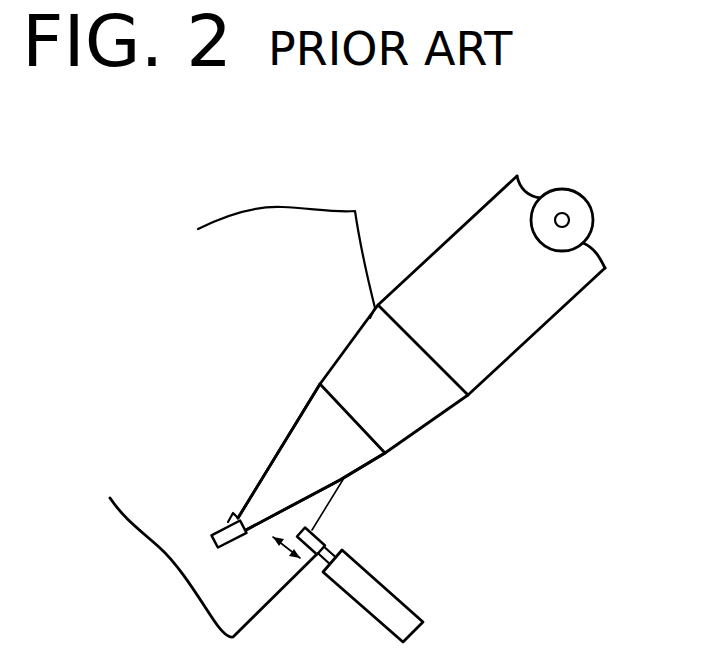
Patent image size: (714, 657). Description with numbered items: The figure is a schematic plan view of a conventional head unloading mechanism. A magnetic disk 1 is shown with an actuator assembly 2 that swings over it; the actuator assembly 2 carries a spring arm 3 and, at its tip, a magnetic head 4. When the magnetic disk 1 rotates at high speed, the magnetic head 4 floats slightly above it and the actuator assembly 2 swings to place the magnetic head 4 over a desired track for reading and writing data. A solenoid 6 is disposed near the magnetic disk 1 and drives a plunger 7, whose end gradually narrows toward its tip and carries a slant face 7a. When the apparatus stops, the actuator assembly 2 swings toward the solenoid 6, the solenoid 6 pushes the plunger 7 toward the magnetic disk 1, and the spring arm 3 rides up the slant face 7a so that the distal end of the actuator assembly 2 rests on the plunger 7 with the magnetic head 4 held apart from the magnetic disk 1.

The magnetic disk 1 is at (277, 236).
The actuator assembly 2 is at (530, 368).
The spring arm 3 is at (276, 445).
The magnetic head 4 is at (218, 523).
The solenoid 6 is at (400, 605).
The plunger 7 is at (337, 544).
The slant face 7a is at (330, 510).